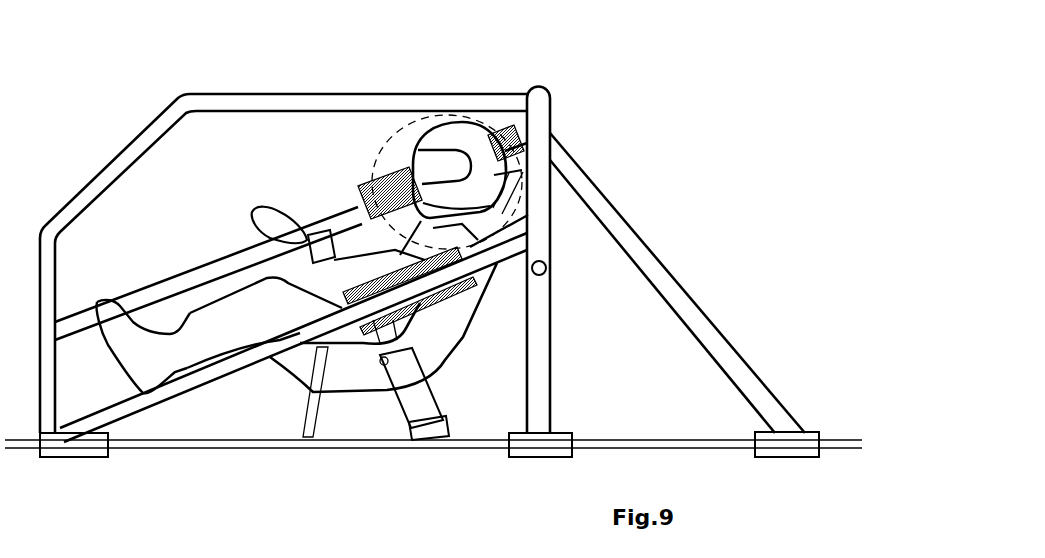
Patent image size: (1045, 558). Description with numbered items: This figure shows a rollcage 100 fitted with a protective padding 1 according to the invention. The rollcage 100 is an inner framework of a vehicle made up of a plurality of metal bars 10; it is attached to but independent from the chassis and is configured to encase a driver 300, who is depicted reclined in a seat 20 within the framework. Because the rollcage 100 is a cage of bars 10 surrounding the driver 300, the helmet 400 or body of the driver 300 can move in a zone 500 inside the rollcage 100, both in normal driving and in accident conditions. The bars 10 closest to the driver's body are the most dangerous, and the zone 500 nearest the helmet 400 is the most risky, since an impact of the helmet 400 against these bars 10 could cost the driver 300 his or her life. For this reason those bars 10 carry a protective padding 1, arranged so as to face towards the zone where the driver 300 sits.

The rollcage 100 is at (622, 174).
The bar 10 is at (218, 107).
The seat 20 is at (357, 372).
The driver 300 is at (278, 303).
The protective padding 1 is at (375, 282).
The helmet 400 is at (455, 143).
The zone 500 is at (392, 186).